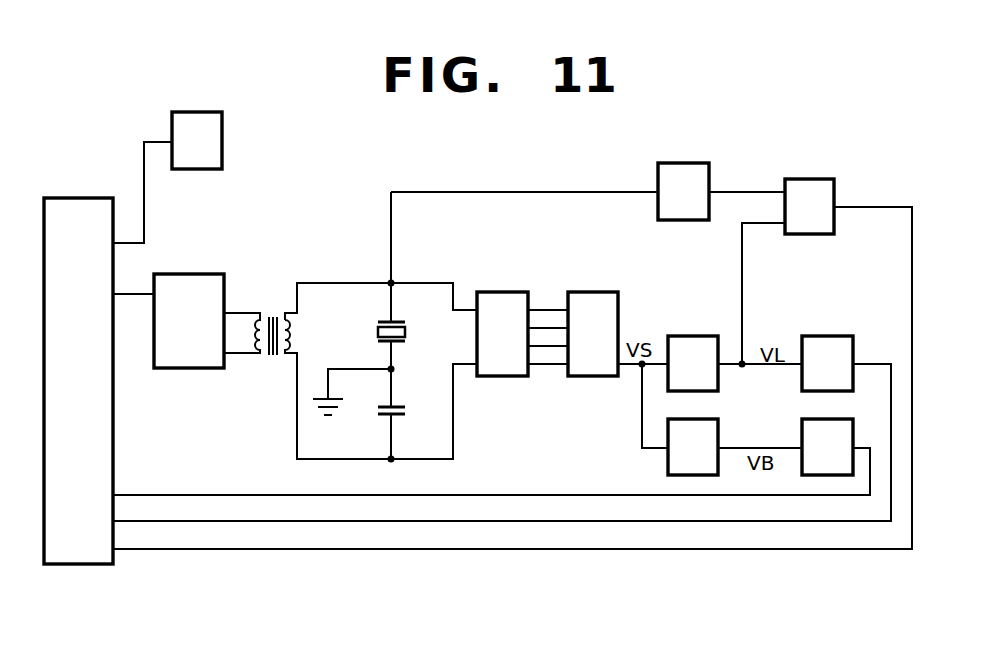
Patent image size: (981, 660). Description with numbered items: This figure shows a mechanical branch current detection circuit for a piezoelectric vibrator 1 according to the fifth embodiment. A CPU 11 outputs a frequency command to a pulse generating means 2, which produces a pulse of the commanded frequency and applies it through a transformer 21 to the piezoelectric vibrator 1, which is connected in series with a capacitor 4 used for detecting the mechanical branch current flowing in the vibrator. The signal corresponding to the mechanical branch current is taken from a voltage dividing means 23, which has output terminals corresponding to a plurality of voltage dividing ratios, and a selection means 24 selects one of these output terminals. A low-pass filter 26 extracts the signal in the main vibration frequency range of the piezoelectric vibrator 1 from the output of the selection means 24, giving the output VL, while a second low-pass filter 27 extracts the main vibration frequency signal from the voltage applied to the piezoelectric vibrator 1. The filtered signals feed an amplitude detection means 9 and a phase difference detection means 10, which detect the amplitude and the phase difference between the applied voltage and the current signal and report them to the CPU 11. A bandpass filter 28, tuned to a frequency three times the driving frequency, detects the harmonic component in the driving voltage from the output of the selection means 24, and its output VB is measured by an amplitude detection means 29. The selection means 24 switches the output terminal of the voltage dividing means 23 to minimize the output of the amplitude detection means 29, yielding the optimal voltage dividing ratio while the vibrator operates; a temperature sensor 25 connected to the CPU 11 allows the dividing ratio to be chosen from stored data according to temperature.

The piezoelectric vibrator 1 is at (406, 326).
The pulse generating means 2 is at (207, 273).
The capacitor 4 is at (406, 408).
The amplitude detection means 9 is at (837, 335).
The phase difference detection means 10 is at (819, 178).
The CPU 11 is at (95, 197).
The transformer 21 is at (261, 317).
The voltage dividing means 23 is at (511, 291).
The selection means 24 is at (600, 291).
The temperature sensor 25 is at (222, 125).
The low-pass filter 26 is at (701, 335).
The low-pass filter 27 is at (691, 162).
The bandpass filter 28 is at (668, 470).
The amplitude detection means 29 is at (802, 432).